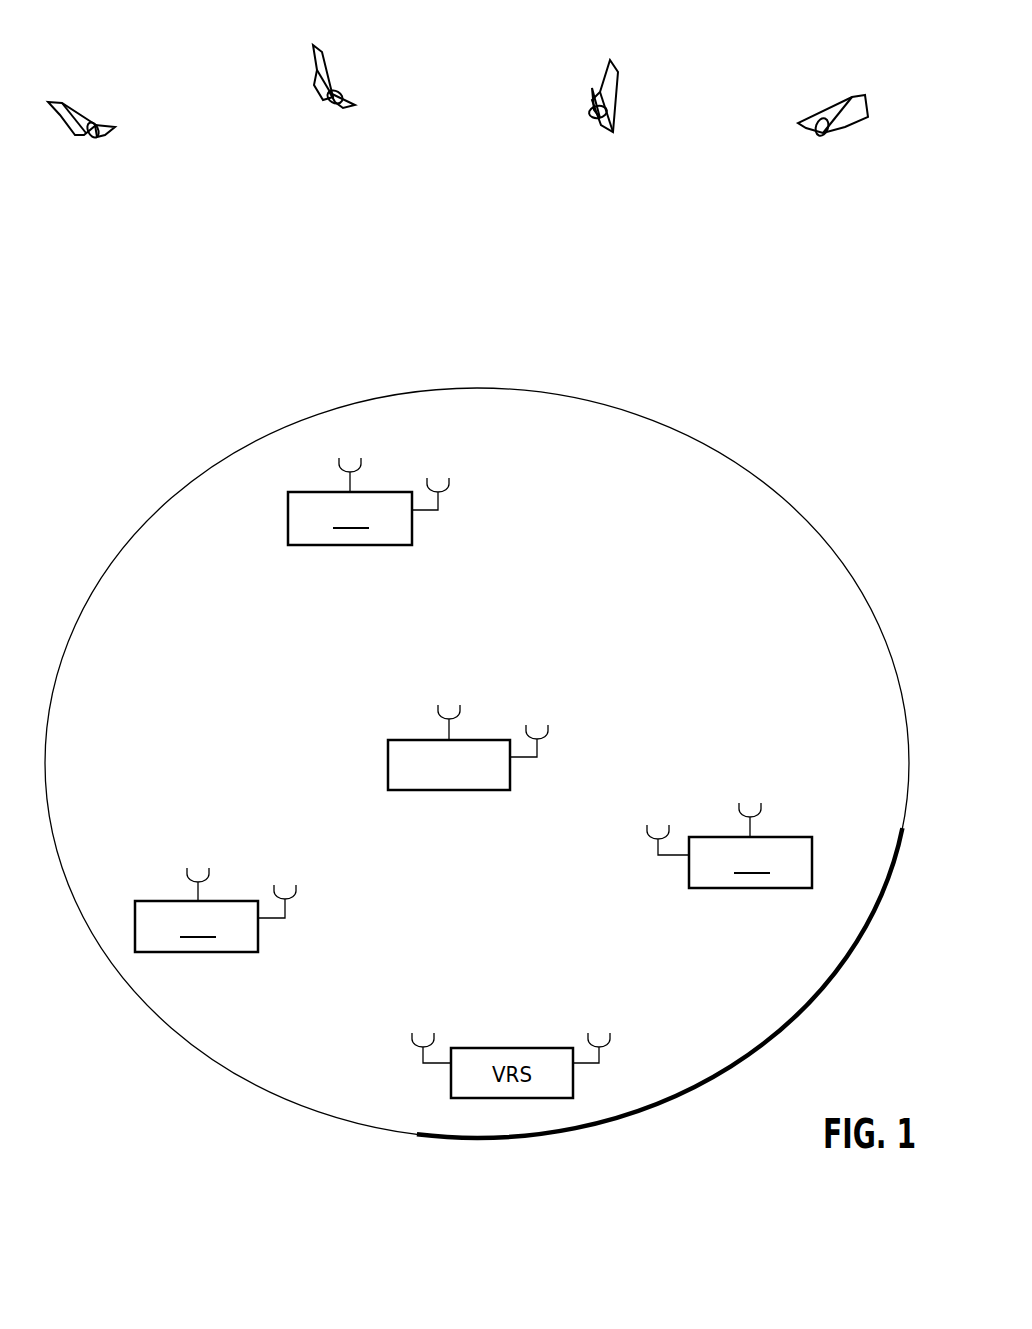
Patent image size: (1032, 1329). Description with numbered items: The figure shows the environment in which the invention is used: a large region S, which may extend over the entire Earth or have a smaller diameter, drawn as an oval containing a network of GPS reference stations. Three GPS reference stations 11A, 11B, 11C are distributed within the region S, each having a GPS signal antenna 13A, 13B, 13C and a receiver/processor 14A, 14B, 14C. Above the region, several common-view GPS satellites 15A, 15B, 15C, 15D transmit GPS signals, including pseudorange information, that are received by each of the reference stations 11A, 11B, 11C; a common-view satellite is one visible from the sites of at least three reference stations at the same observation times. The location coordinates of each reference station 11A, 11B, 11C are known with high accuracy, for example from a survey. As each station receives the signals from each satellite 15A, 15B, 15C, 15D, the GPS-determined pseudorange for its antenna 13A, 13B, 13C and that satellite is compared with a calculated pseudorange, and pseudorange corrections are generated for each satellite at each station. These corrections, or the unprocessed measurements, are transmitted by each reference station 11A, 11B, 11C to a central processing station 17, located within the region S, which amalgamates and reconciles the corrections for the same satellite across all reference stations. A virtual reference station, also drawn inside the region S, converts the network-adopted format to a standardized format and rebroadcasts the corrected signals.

The region S is at (730, 545).
The GPS satellite 15A is at (85, 118).
The GPS satellite 15B is at (332, 62).
The GPS satellite 15C is at (597, 80).
The GPS satellite 15D is at (817, 112).
The GPS reference station 11A is at (215, 921).
The GPS reference station 11B is at (368, 515).
The GPS reference station 11C is at (747, 857).
The GPS signal antenna 13A is at (203, 891).
The GPS signal antenna 13B is at (353, 482).
The GPS signal antenna 13C is at (758, 828).
The receiver/processor 14A is at (196, 926).
The receiver/processor 14B is at (350, 518).
The receiver/processor 14C is at (750, 862).
The central processing station 17 is at (459, 801).